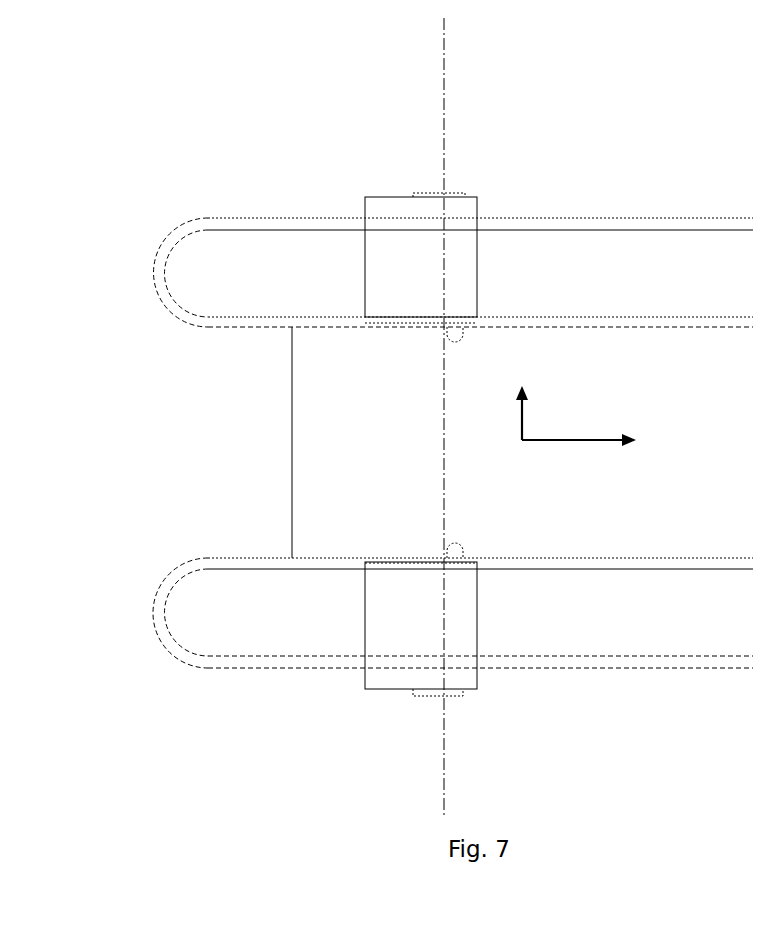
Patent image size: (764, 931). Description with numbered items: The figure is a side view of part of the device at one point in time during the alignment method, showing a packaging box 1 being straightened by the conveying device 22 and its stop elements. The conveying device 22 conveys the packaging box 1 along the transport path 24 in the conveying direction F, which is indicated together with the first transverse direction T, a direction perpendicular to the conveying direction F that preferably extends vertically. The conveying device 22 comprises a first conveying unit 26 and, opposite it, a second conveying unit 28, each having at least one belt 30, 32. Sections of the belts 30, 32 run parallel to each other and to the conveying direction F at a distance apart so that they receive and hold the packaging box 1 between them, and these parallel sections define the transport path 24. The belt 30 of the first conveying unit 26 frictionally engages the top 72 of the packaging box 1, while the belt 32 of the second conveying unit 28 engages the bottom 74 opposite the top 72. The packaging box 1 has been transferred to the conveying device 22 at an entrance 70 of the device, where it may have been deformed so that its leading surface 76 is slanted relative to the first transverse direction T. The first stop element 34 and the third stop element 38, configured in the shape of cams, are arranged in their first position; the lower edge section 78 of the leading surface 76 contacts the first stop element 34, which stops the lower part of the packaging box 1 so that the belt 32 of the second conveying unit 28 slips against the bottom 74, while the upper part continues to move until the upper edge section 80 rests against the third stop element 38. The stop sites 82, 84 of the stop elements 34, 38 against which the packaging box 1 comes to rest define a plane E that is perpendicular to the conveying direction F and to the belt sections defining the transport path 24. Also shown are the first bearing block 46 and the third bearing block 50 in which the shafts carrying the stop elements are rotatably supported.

The packaging box 1 is at (302, 495).
The conveying device 22 is at (580, 128).
The transport path 24 is at (597, 533).
The first conveying unit 26 is at (622, 180).
The second conveying unit 28 is at (613, 698).
The belt 30 is at (667, 226).
The belt 32 is at (692, 663).
The first stop element 34 is at (457, 557).
The third stop element 38 is at (457, 332).
The first bearing block 46 is at (418, 670).
The third bearing block 50 is at (393, 224).
The entrance 70 is at (143, 652).
The top 72 is at (315, 330).
The bottom 74 is at (327, 557).
The leading surface 76 is at (440, 393).
The lower edge section 78 is at (443, 543).
The upper edge section 80 is at (443, 332).
The stop site 82 is at (443, 327).
The stop site 84 is at (445, 558).
The plane E is at (443, 780).
The first transverse direction T is at (513, 408).
The conveying direction F is at (580, 453).